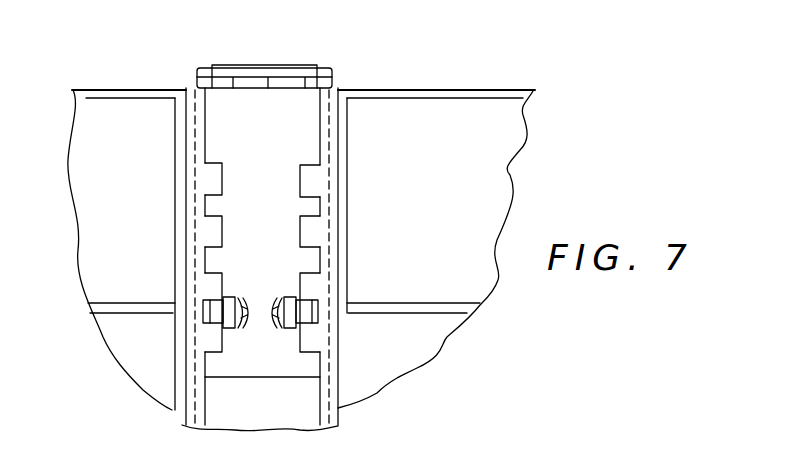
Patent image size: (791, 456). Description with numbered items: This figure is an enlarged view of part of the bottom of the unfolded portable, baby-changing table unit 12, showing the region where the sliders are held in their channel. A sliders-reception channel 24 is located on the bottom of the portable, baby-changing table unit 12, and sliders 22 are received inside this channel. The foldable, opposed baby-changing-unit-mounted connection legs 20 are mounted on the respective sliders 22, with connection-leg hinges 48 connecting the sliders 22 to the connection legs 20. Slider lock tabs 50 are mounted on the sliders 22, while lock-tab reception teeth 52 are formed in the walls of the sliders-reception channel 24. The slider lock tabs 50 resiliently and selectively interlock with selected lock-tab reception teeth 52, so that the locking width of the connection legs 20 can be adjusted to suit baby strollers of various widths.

The portable, baby-changing table unit 12 is at (260, 416).
The baby-changing-unit-mounted connection leg 20 is at (282, 65).
The slider 22 is at (248, 137).
The sliders-reception channel 24 is at (327, 262).
The connection-leg hinge 48 is at (333, 80).
The slider lock tab 50 is at (227, 318).
The lock-tab reception tooth 52 is at (217, 228).